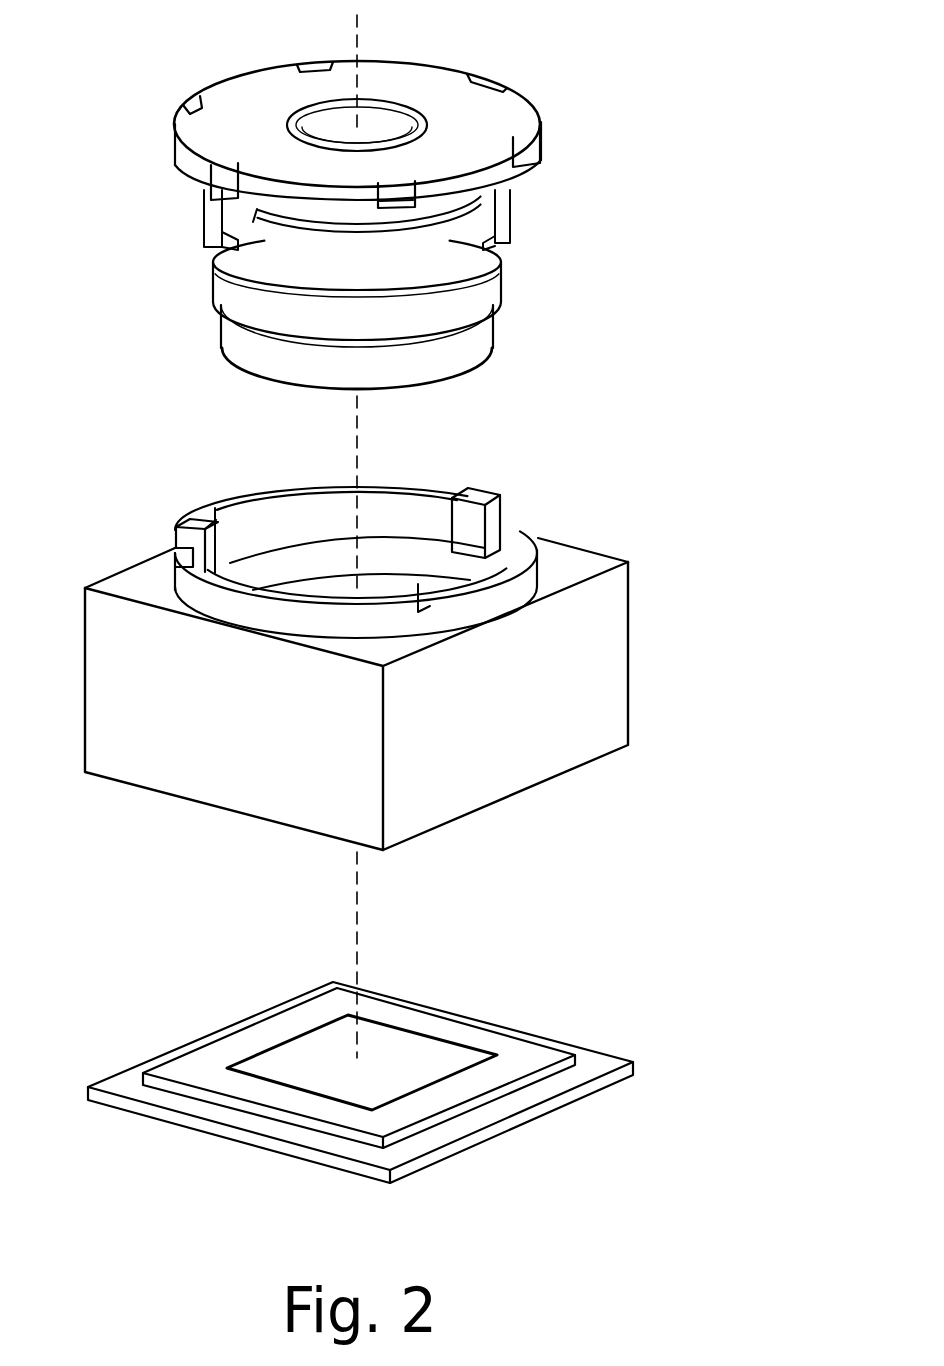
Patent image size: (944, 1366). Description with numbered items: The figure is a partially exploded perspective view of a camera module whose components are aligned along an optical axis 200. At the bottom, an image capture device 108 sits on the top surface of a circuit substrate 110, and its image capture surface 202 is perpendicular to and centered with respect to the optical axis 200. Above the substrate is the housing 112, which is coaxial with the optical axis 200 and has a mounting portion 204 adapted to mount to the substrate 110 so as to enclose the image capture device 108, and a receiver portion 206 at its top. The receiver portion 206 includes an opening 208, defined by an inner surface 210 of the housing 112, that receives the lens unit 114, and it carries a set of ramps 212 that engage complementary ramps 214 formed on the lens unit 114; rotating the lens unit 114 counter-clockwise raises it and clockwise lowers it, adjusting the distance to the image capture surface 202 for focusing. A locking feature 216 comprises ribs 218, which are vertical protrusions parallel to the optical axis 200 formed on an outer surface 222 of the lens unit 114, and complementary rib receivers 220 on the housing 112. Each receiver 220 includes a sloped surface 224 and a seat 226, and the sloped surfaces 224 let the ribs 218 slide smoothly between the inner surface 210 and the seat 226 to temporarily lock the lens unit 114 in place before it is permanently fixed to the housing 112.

The optical axis 200 is at (357, 28).
The lens unit 114 is at (628, 155).
The complementary ramps 214 is at (253, 228).
The ribs 218 is at (495, 222).
The outer surface 222 is at (217, 358).
The locking feature 216 is at (527, 223).
The housing 112 is at (703, 645).
The mounting portion 204 is at (477, 813).
The receiver portion 206 is at (105, 588).
The opening 208 is at (250, 524).
The inner surface 210 is at (308, 515).
The seat 226 is at (450, 519).
The ramps 212 is at (287, 600).
The rib receivers 220 is at (488, 482).
The sloped surface 224 is at (497, 537).
The circuit substrate 110 is at (117, 1083).
The image capture device 108 is at (213, 1062).
The image capture surface 202 is at (297, 1057).